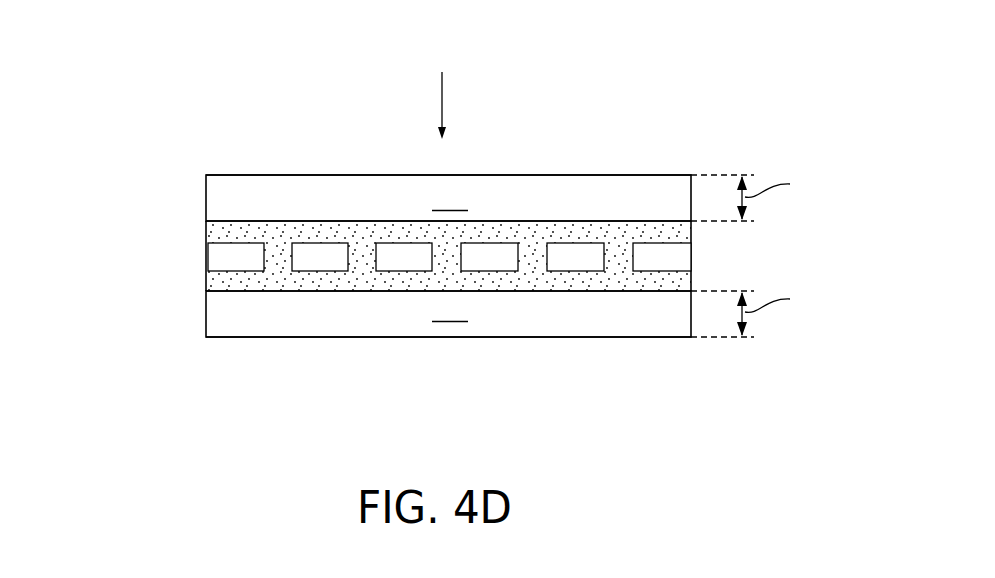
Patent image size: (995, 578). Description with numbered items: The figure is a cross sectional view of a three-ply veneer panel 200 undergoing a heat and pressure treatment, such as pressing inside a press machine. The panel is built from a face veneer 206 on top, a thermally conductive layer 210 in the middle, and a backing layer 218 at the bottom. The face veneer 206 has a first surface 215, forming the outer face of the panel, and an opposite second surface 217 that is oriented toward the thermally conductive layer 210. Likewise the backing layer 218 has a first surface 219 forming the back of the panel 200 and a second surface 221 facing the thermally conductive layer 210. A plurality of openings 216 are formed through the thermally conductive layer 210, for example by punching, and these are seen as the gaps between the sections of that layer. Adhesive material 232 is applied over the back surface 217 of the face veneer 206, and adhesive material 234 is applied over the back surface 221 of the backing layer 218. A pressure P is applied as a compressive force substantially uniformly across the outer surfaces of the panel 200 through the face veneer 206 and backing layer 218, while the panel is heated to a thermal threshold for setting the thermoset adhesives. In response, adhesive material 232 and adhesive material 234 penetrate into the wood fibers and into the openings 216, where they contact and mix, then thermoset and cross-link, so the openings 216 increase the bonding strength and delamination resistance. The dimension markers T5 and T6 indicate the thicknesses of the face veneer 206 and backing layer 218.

The veneer panel 200 is at (431, 219).
The face veneer 206 is at (448, 198).
The backing layer 218 is at (448, 314).
The thermally conductive layer 210 is at (672, 250).
The openings 216 is at (283, 236).
The first surface of face veneer 215 is at (588, 176).
The first surface of backing layer 219 is at (362, 338).
The second surface of face veneer 217 is at (211, 240).
The second surface of backing layer 221 is at (219, 290).
The adhesive material 232 is at (637, 229).
The adhesive material 234 is at (651, 277).
The pressure P is at (442, 90).
The thickness of first layer T5 is at (754, 196).
The thickness of second layer T6 is at (754, 312).